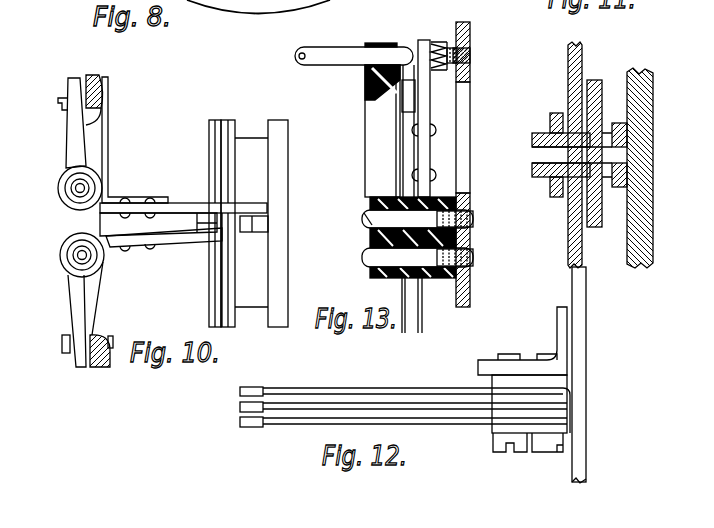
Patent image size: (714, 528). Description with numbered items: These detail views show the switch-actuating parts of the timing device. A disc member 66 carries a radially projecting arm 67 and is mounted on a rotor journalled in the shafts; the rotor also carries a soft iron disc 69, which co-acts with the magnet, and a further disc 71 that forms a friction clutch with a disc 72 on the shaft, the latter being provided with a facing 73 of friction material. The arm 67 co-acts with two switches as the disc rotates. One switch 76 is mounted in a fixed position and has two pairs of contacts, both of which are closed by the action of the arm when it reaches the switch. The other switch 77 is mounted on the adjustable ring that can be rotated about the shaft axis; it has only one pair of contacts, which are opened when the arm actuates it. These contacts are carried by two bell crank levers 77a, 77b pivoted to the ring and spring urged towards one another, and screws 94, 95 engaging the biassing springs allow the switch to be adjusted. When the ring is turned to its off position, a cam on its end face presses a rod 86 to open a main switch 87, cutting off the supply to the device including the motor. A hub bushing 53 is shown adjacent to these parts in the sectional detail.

In FIG. 11, the hub bushing 53 is at (593, 210).
In FIG. 10, the disc member 66 is at (249, 137).
In FIG. 10, the arm 67 is at (268, 225).
In FIG. 10, the soft iron disc 69 is at (288, 268).
In FIG. 10, the disc 71 is at (230, 119).
In FIG. 10, the disc 72 is at (213, 119).
In FIG. 10, the facing 73 is at (223, 318).
In FIG. 12, the switch 76 is at (289, 401).
In FIG. 10, the switch 77 is at (175, 216).
In FIG. 10, the bell crank lever 77a is at (135, 207).
In FIG. 10, the bell crank lever 77b is at (140, 238).
In FIG. 13, the rod 86 is at (336, 66).
In FIG. 13, the main switch 87 is at (422, 44).
In FIG. 10, the screw 94 is at (68, 106).
In FIG. 10, the screw 95 is at (67, 336).